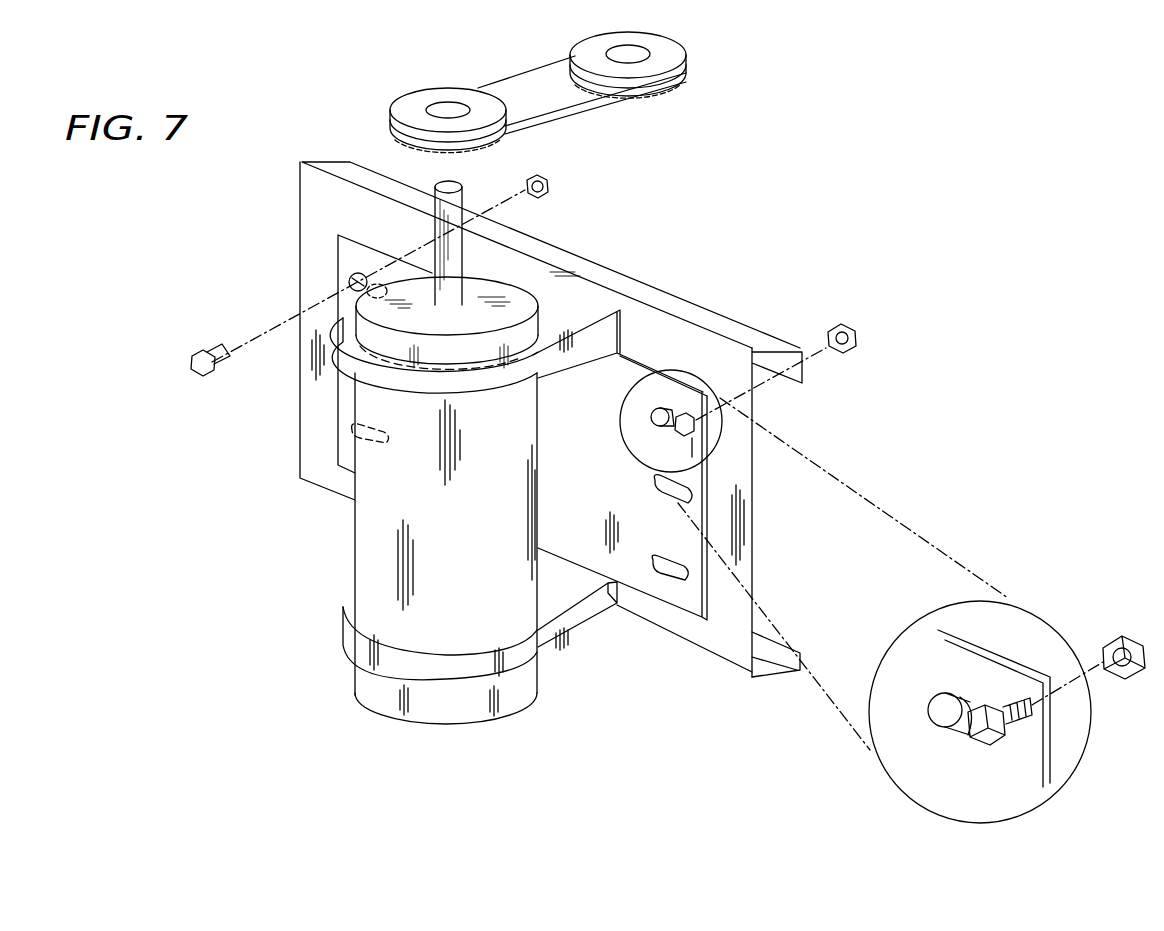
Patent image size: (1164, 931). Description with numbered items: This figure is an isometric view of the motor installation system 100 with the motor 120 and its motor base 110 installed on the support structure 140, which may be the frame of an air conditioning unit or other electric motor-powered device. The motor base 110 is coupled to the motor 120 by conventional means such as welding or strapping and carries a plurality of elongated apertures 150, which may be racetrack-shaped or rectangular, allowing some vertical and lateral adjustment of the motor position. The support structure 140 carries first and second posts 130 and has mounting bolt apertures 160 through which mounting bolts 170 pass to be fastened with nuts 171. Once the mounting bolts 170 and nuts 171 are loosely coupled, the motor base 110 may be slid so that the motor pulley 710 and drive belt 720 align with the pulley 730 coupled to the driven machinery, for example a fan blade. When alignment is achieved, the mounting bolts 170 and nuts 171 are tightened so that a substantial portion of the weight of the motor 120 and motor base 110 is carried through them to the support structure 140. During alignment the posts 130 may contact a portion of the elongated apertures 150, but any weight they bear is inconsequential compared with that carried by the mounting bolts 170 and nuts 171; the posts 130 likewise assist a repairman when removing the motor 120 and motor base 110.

The motor installation system 100 is at (773, 184).
The motor base 110 is at (640, 577).
The motor 120 is at (373, 548).
The posts 130 is at (378, 285).
The support structure 140 is at (727, 652).
The elongated apertures 150 is at (656, 485).
The mounting bolt apertures 160 is at (353, 280).
The mounting bolts 170 is at (205, 348).
The nuts 171 is at (556, 190).
The motor pulley 710 is at (420, 100).
The drive belt 720 is at (527, 83).
The pulley 730 is at (688, 53).